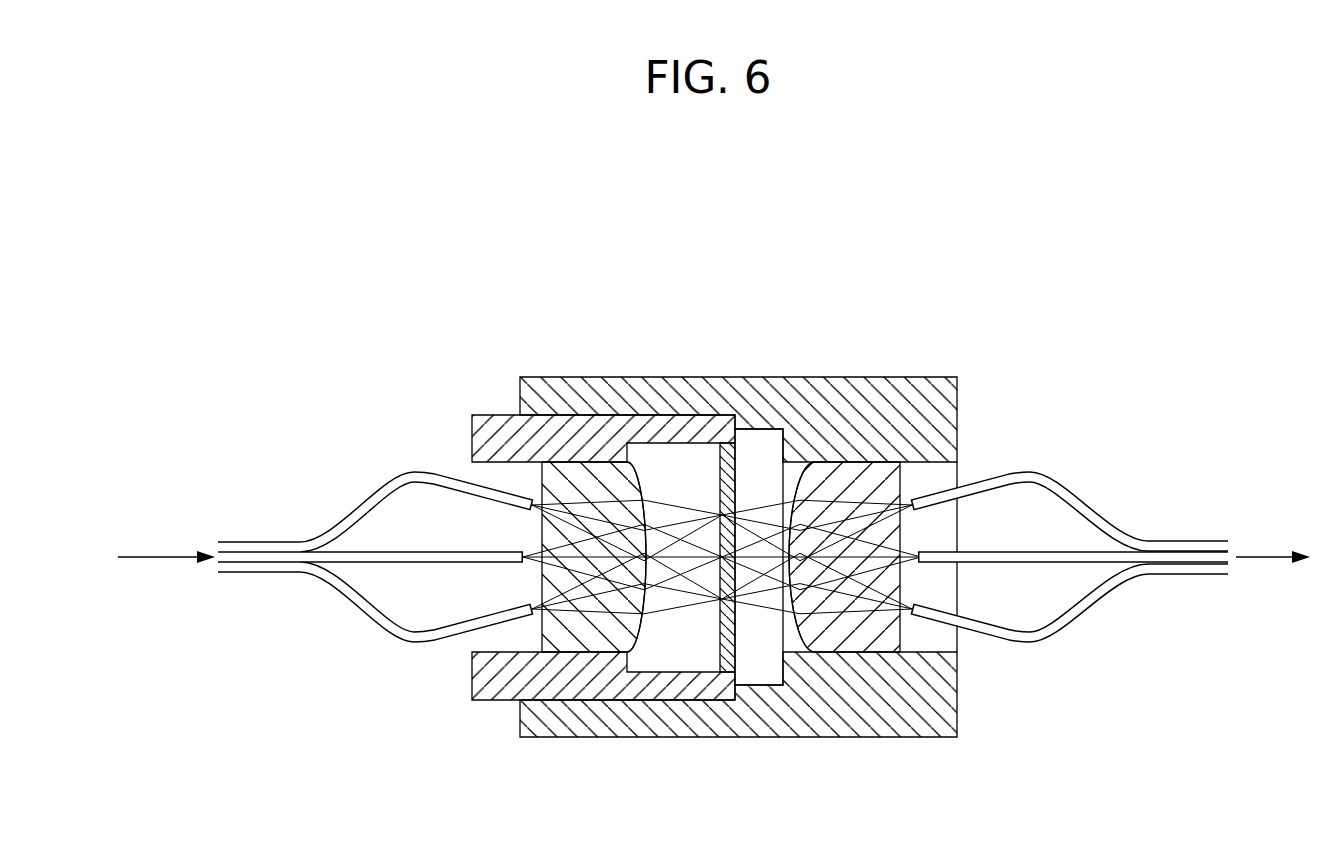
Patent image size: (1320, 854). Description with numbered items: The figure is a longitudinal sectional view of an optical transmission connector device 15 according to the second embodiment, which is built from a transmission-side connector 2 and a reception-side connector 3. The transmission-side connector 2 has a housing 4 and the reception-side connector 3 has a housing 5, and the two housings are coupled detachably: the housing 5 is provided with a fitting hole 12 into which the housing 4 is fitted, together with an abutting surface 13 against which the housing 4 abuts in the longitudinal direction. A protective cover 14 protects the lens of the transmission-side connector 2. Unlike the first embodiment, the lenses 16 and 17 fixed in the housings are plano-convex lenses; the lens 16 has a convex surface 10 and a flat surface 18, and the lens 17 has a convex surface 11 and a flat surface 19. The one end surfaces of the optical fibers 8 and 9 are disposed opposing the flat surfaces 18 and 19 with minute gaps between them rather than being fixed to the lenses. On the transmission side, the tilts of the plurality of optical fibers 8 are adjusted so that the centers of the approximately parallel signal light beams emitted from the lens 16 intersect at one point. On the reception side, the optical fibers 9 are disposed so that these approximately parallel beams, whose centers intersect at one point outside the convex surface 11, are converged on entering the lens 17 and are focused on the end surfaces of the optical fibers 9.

The transmission-side connector 2 is at (481, 395).
The reception-side connector 3 is at (860, 358).
The housing 4 is at (500, 702).
The housing 5 is at (703, 740).
The optical fibers 8 is at (392, 475).
The optical fibers 9 is at (1033, 473).
The convex surface 10 is at (645, 476).
The convex surface 11 is at (788, 634).
The fitting hole 12 is at (598, 418).
The abutting surface 13 is at (728, 421).
The protective cover 14 is at (742, 462).
The optical transmission connector device 15 is at (695, 237).
The lens 16 is at (577, 640).
The lens 17 is at (855, 640).
The flat surface 18 is at (533, 581).
The flat surface 19 is at (902, 575).